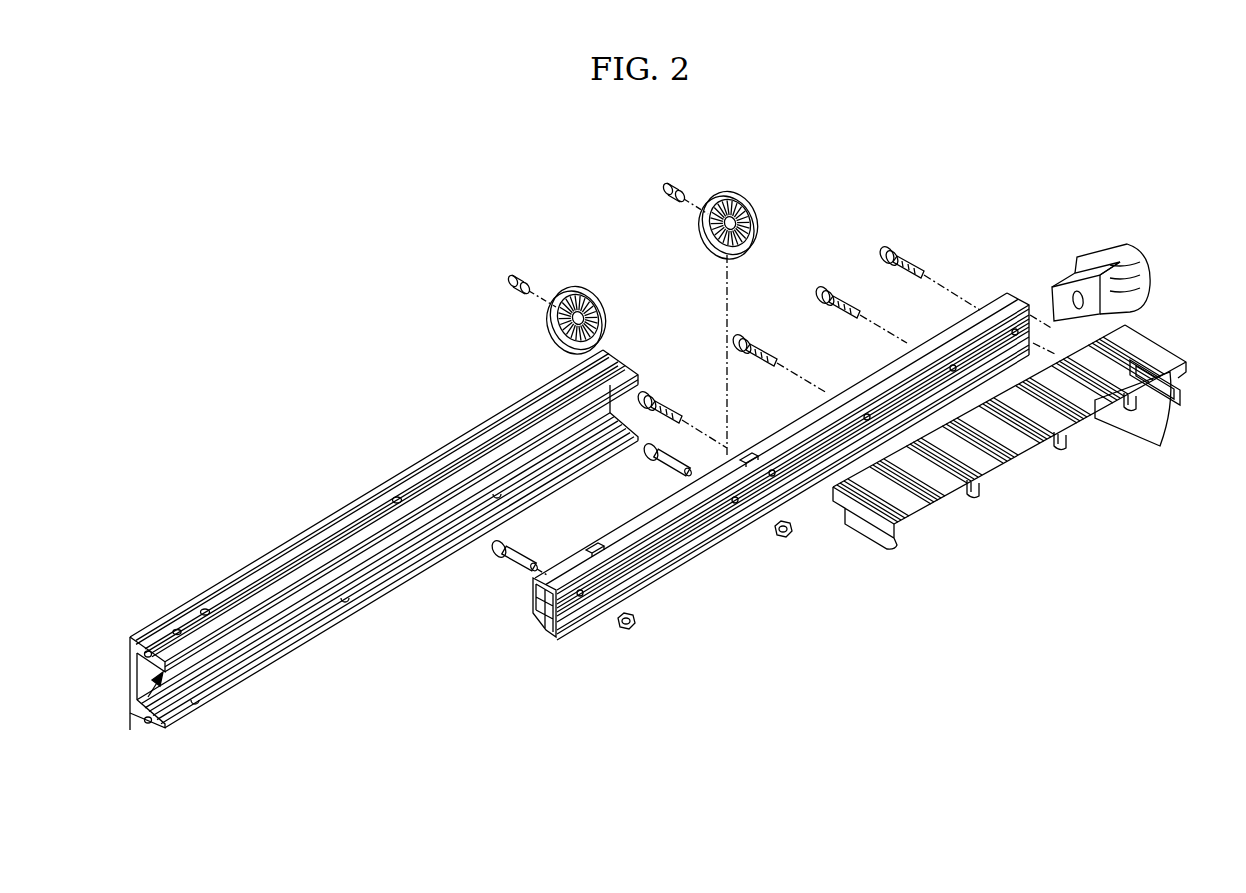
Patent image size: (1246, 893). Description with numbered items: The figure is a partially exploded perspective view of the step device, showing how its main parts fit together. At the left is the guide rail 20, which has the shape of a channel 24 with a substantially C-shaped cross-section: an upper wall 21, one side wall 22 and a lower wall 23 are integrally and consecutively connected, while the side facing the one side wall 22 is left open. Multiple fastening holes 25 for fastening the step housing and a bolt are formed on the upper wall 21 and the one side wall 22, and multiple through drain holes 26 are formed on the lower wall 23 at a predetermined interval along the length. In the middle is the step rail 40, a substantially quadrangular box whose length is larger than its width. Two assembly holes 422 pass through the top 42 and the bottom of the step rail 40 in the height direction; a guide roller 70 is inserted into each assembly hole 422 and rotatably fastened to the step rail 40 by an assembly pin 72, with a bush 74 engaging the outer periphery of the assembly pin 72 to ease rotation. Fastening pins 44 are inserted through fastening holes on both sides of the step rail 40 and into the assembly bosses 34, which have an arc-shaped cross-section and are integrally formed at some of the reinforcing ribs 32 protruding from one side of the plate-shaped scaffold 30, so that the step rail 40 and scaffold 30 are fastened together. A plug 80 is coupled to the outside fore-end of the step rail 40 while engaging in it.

The guide rail 20 is at (359, 559).
The upper wall 21 is at (268, 535).
The one side wall 22 is at (128, 676).
The lower wall 23 is at (287, 660).
The channel 24 is at (128, 722).
The fastening holes 25 is at (397, 497).
The through drain holes 26 is at (497, 492).
The scaffold 30 is at (1009, 472).
The reinforcing ribs 32 is at (931, 522).
The assembly bosses 34 is at (986, 490).
The step rail 40 is at (781, 497).
The top 42 is at (662, 545).
The assembly holes 422 is at (547, 640).
The fastening pin 44 is at (745, 340).
The guide roller 70 is at (587, 289).
The assembly pin 72 is at (648, 462).
The bush 74 is at (520, 276).
The plug 80 is at (1102, 246).